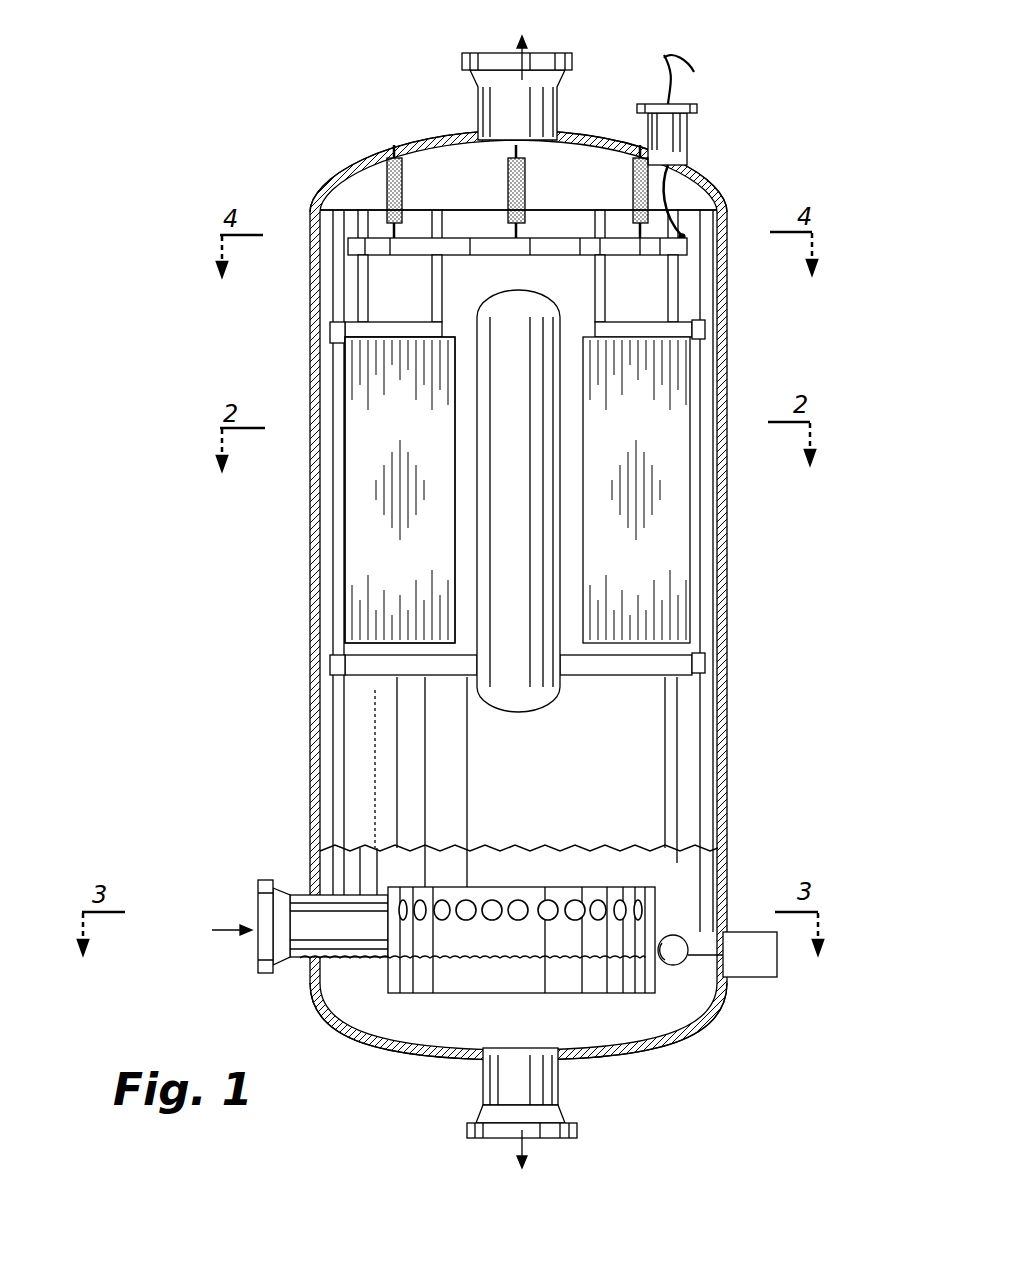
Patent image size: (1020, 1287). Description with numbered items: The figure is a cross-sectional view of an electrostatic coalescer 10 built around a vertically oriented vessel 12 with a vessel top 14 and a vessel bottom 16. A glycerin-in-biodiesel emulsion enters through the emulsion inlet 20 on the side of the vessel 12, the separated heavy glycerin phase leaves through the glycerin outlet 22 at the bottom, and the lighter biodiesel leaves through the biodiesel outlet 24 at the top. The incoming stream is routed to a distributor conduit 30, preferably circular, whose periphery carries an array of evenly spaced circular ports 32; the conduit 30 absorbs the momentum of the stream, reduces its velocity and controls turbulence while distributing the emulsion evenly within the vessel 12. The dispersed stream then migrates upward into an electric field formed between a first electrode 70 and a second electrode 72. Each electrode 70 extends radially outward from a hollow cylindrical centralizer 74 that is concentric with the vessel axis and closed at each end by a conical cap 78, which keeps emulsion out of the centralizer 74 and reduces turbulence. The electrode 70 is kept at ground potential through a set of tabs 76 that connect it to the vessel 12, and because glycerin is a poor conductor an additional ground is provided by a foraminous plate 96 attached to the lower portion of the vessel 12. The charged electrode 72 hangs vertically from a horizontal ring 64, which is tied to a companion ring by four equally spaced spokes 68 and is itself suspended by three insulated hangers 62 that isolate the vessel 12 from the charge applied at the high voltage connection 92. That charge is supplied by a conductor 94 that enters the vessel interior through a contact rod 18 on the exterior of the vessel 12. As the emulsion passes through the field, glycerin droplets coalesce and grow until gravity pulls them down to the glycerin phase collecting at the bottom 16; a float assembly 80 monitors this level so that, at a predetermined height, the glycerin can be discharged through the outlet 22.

The electrostatic coalescer 10 is at (286, 174).
The vessel 12 is at (728, 340).
The vessel top 14 is at (405, 138).
The vessel bottom 16 is at (373, 1045).
The contact rod 18 is at (697, 107).
The emulsion inlet 20 is at (258, 882).
The glycerin outlet 22 is at (575, 1124).
The biodiesel outlet 24 is at (573, 58).
The distributor conduit 30 is at (455, 887).
The port 32 is at (518, 905).
The insulated hanger 62 is at (388, 178).
The ring 64 is at (475, 243).
The spoke 68 is at (432, 286).
The electrode 70 is at (395, 678).
The electrode 72 is at (455, 358).
The centralizer 74 is at (562, 655).
The tab 76 is at (333, 332).
The cap 78 is at (525, 705).
The float assembly 80 is at (676, 935).
The high voltage connection 92 is at (684, 234).
The conductor 94 is at (672, 193).
The foraminous plate 96 is at (620, 848).